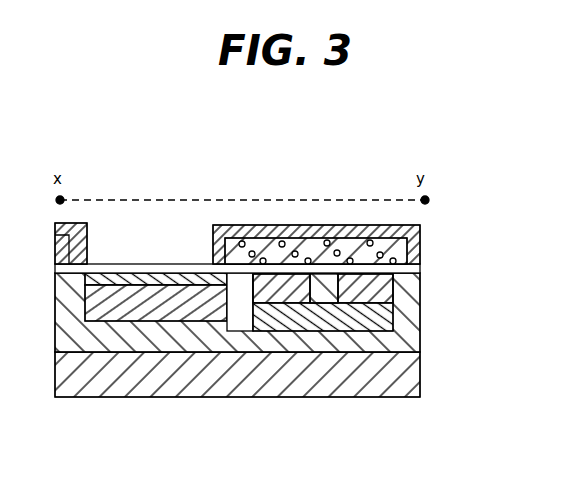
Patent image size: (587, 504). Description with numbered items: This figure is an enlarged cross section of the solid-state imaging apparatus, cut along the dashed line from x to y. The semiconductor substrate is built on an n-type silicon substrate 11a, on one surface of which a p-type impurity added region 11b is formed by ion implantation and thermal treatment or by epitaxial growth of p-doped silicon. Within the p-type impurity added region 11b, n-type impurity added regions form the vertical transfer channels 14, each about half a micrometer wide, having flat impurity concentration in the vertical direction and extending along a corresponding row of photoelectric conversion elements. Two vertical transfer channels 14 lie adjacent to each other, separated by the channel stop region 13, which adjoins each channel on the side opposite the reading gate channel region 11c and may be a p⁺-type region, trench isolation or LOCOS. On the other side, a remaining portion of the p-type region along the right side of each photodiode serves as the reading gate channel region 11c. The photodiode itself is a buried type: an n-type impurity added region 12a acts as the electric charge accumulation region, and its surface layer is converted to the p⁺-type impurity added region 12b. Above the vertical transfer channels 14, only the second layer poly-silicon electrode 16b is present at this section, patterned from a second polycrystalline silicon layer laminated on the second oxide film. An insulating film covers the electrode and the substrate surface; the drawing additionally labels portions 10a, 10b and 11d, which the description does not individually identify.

The first substrate layer 10a is at (420, 270).
The second substrate layer 10b is at (420, 232).
The n-type silicon substrate 11a is at (420, 370).
The p-type impurity added region 11b is at (420, 332).
The reading gate channel region 11c is at (235, 306).
The lower layer 11d is at (322, 318).
The n-type impurity added region 12a is at (184, 321).
The p⁺-type impurity added region 12b is at (162, 273).
The channel stop region 13 is at (356, 298).
The vertical transfer channel 14 is at (281, 303).
The second layer poly-silicon electrode 16b is at (408, 256).